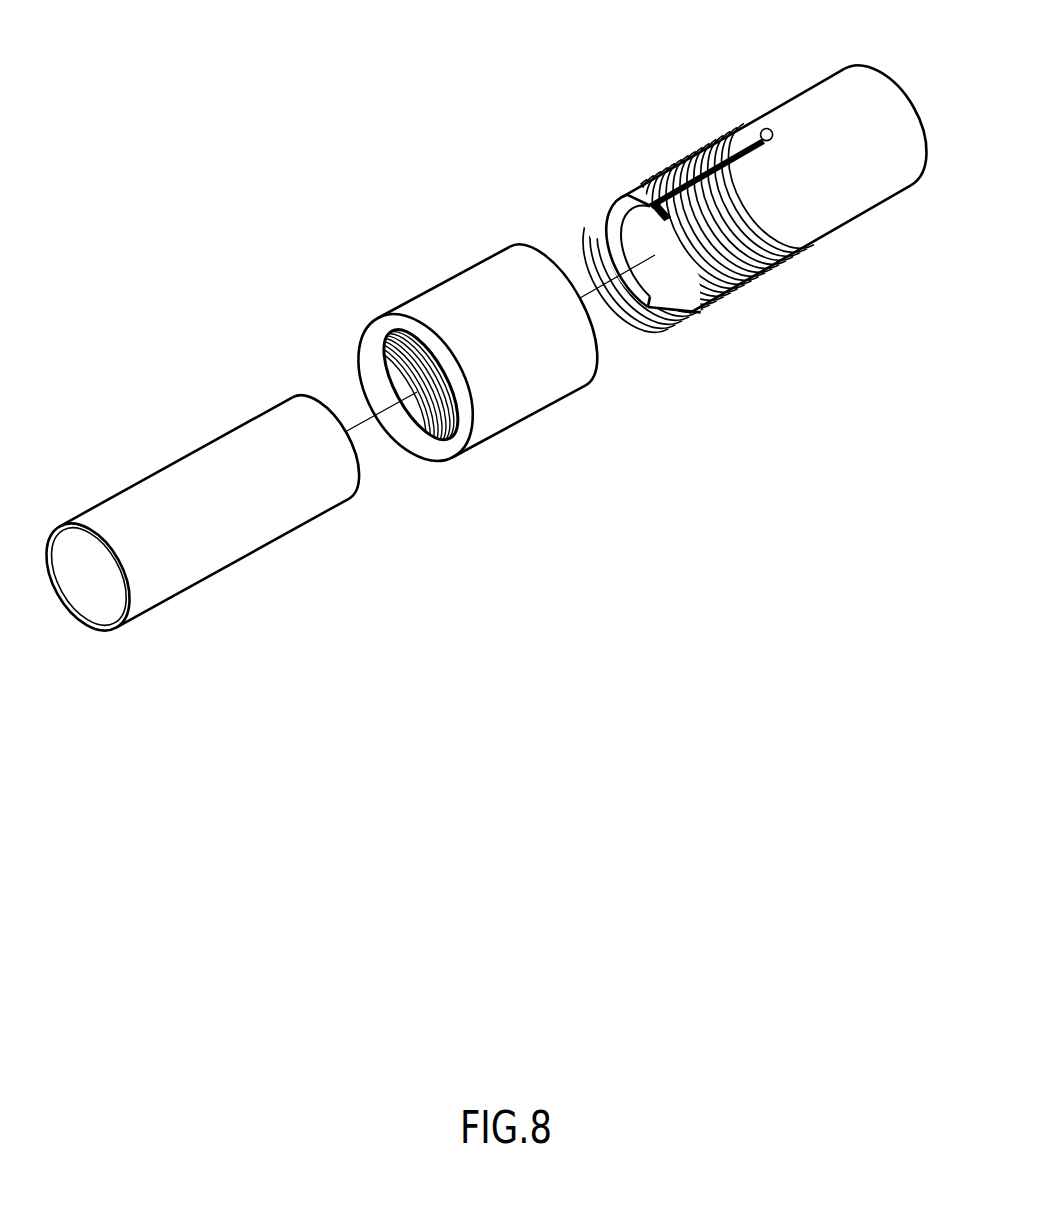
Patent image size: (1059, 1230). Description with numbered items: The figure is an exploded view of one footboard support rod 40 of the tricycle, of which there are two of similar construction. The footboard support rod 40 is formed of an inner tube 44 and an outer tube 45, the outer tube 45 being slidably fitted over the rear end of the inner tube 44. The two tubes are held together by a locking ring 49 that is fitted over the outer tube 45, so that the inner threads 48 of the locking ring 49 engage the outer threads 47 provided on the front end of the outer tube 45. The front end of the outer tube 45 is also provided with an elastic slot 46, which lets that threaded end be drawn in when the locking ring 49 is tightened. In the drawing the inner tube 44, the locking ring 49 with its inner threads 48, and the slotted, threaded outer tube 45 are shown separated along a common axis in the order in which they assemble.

The footboard support rod 40 is at (398, 118).
The inner tube 44 is at (210, 458).
The outer tube 45 is at (758, 216).
The elastic slot 46 is at (692, 175).
The outer threads 47 is at (773, 272).
The inner threads 48 is at (428, 428).
The locking ring 49 is at (472, 396).